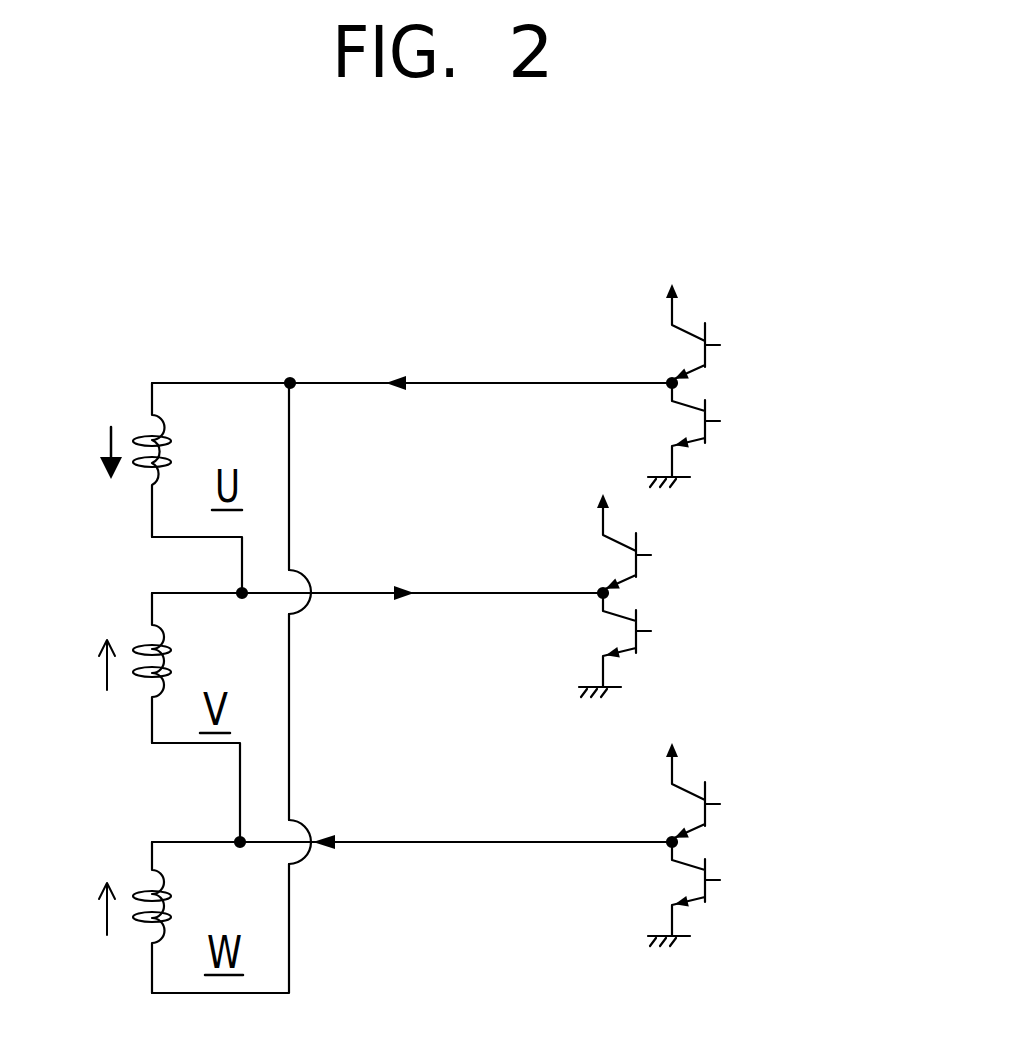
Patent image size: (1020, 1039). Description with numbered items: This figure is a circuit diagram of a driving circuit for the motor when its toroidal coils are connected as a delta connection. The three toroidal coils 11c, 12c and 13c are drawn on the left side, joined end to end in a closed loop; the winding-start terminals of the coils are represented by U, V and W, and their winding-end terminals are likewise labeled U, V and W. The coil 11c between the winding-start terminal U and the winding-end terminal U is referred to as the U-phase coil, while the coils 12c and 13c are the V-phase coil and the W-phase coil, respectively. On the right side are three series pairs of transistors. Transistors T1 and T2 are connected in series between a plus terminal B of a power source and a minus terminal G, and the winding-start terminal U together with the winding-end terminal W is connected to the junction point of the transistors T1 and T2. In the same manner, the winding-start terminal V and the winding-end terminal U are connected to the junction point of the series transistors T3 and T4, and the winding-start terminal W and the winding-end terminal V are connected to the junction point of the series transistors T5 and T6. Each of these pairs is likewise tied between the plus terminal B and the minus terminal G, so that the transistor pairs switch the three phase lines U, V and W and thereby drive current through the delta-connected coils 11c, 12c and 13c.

The toroidal coil 11c is at (148, 432).
The toroidal coil 12c is at (148, 645).
The toroidal coil 13c is at (148, 890).
The transistor T1 is at (684, 328).
The transistor T2 is at (684, 410).
The transistor T3 is at (616, 538).
The transistor T4 is at (616, 614).
The transistor T5 is at (684, 787).
The transistor T6 is at (684, 868).
The winding-start terminal U is at (475, 383).
The winding-start terminal V is at (348, 593).
The winding-start terminal W is at (382, 842).
The plus terminal of power source B is at (680, 292).
The minus terminal of power source G is at (690, 487).